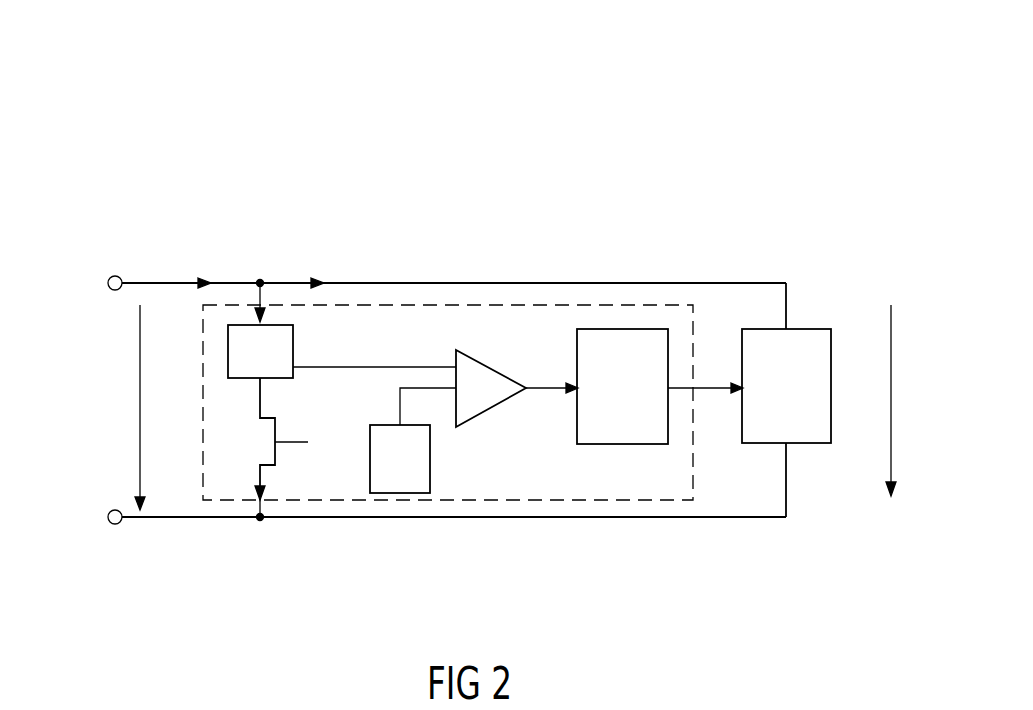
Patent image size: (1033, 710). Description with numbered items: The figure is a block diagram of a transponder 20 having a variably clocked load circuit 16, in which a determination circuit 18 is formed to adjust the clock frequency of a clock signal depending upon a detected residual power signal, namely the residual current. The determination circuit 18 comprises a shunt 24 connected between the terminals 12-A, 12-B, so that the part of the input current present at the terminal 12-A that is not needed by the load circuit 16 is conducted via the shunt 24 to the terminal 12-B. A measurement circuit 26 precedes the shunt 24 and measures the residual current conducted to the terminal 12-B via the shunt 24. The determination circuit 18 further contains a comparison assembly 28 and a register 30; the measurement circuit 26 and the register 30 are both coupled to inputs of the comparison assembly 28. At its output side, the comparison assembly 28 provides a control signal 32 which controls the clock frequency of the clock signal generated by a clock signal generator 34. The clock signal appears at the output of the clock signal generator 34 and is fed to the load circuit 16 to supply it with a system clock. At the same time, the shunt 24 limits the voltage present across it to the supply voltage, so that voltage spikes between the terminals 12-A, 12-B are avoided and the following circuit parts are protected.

The transponder 20 is at (764, 88).
The terminal 12-A is at (113, 276).
The terminal 12-B is at (116, 525).
The load circuit 16 is at (818, 329).
The determination circuit 18 is at (543, 501).
The shunt 24 is at (246, 455).
The measurement circuit 26 is at (228, 352).
The comparison assembly 28 is at (494, 366).
The register 30 is at (400, 494).
The control signal 32 is at (548, 392).
The clock signal generator 34 is at (620, 329).